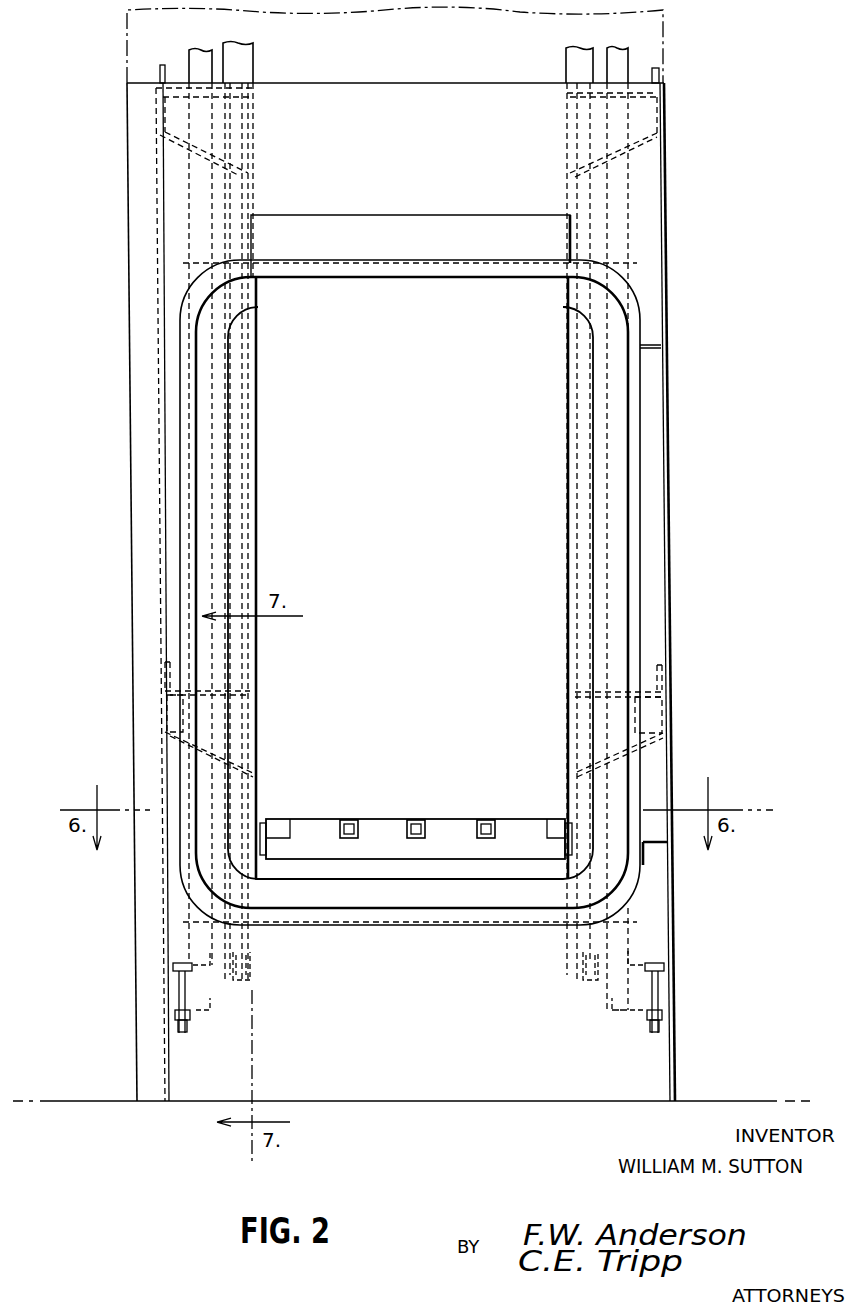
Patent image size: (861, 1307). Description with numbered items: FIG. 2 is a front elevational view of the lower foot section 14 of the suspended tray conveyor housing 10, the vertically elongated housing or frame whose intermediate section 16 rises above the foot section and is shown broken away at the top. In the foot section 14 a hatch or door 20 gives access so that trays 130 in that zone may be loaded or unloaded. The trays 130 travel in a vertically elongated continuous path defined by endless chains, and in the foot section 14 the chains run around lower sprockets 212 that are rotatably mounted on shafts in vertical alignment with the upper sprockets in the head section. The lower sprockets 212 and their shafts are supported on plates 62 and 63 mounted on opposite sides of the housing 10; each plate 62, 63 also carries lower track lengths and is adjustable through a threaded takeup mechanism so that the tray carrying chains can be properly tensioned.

The housing 10 is at (728, 170).
The lower foot section 14 is at (667, 279).
The intermediate section 16 is at (665, 28).
The hatch or door 20 is at (368, 278).
The tray 130 is at (318, 820).
The lower sprocket 212 is at (253, 960).
The plate 62 is at (202, 998).
The plate 63 is at (610, 1000).